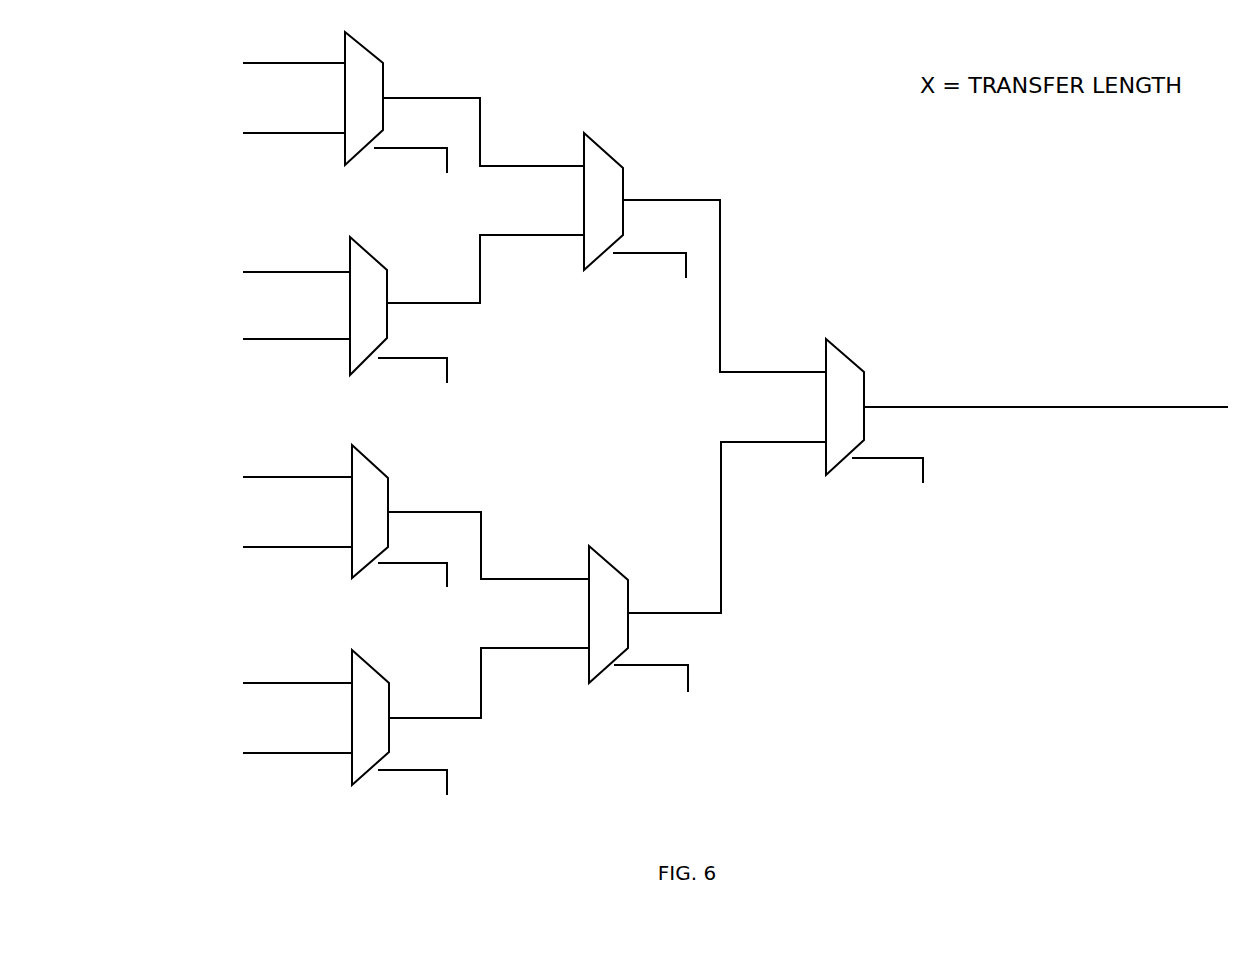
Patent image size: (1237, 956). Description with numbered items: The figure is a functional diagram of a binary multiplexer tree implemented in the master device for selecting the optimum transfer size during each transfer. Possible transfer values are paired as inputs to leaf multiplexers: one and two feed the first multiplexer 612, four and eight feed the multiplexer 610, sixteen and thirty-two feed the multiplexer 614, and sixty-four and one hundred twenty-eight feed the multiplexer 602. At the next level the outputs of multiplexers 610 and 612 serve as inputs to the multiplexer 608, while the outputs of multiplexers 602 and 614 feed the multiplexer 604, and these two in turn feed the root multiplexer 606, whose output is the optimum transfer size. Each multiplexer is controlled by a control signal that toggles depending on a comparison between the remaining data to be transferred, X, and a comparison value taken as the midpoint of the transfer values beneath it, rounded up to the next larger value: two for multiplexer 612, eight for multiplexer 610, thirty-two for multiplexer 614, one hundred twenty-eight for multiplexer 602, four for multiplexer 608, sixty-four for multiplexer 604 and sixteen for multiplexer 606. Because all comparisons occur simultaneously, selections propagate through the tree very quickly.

The multiplexer 602 is at (375, 98).
The multiplexer 604 is at (609, 200).
The multiplexer 606 is at (851, 407).
The multiplexer 608 is at (613, 613).
The multiplexer 610 is at (380, 512).
The multiplexer 612 is at (380, 718).
The multiplexer 614 is at (379, 303).